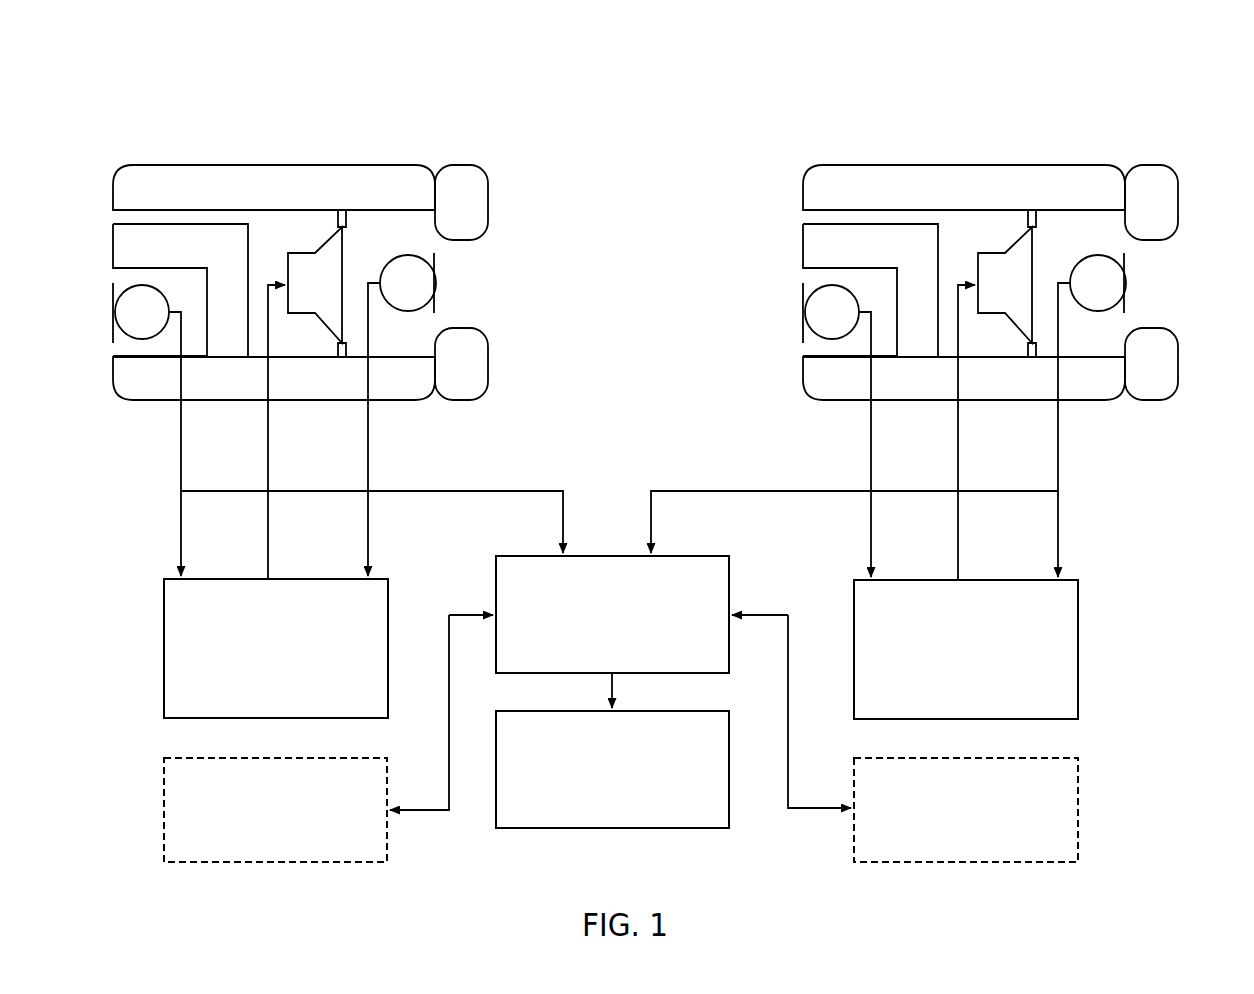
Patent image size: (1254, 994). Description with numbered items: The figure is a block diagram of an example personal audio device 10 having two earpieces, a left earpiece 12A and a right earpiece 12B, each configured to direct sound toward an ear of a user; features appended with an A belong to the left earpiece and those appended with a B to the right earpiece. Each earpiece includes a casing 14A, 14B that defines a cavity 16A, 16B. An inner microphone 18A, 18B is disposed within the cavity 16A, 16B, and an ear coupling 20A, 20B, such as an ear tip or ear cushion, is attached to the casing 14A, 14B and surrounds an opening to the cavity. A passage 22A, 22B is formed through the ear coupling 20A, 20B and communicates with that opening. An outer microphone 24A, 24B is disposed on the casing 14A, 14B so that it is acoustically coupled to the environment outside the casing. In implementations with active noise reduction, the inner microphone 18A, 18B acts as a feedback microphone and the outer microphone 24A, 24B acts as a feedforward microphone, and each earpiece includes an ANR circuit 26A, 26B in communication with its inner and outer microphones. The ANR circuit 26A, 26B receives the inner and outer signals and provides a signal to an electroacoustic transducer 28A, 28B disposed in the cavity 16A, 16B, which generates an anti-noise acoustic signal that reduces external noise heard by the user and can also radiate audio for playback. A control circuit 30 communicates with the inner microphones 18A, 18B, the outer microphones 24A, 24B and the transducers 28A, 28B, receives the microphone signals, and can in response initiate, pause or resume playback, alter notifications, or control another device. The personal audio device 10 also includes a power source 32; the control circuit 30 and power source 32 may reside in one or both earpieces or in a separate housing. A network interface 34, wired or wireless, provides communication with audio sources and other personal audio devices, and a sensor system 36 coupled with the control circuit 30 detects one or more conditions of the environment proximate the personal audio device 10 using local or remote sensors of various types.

The personal audio device 10 is at (669, 106).
The left earpiece 12A is at (160, 115).
The right earpiece 12B is at (870, 197).
The casing 14A is at (268, 197).
The casing 14B is at (964, 282).
The cavity 16A is at (423, 329).
The cavity 16B is at (1171, 318).
The inner microphone 18A is at (389, 294).
The inner microphone 18B is at (1098, 283).
The ear coupling 20A is at (442, 216).
The ear coupling 20B is at (1151, 282).
The passage 22A is at (474, 270).
The passage 22B is at (1173, 269).
The outer microphone 24A is at (123, 323).
The outer microphone 24B is at (832, 312).
The ANR circuit 26A is at (257, 669).
The ANR circuit 26B is at (947, 669).
The electroacoustic transducer 28A is at (292, 296).
The electroacoustic transducer 28B is at (1007, 283).
The control circuit 30 is at (599, 656).
The power source 32 is at (599, 810).
The network interface 34 is at (263, 848).
The sensor system 36 is at (953, 839).